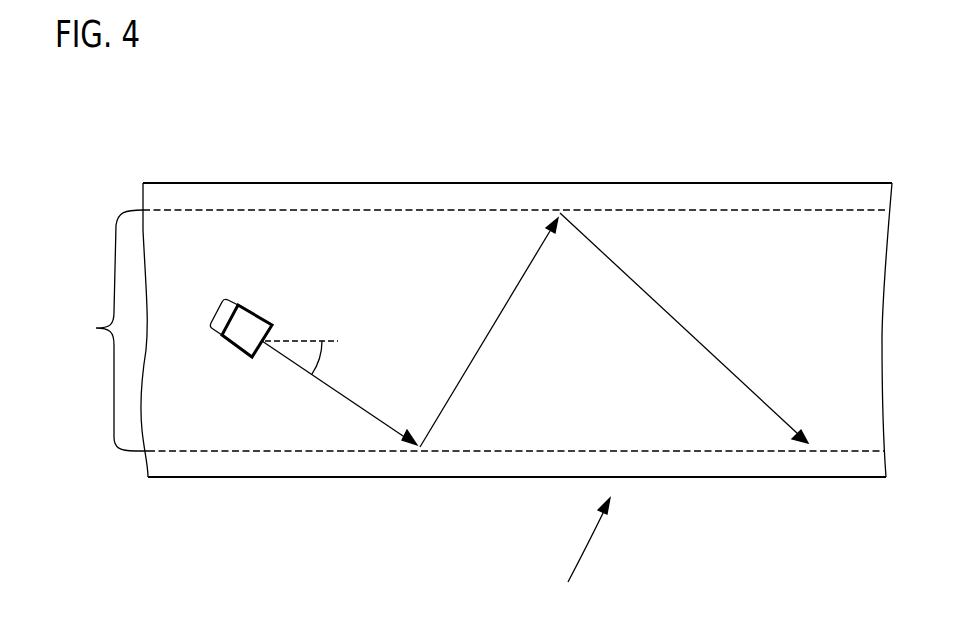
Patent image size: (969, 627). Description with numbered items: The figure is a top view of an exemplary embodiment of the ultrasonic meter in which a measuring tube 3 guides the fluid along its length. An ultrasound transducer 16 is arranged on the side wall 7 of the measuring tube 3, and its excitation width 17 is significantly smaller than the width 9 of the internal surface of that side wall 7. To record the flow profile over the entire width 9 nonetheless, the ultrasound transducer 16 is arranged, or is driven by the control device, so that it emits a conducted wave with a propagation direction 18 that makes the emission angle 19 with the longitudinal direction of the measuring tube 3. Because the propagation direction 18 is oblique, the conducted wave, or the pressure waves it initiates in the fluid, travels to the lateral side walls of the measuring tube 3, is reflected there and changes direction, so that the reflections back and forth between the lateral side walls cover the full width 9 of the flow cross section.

The measuring tube 3 is at (583, 556).
The side wall 7 is at (517, 432).
The width 9 is at (112, 330).
The ultrasound transducer 16 is at (262, 312).
The excitation width 17 is at (222, 303).
The propagation direction 18 is at (363, 407).
The emission angle 19 is at (302, 350).